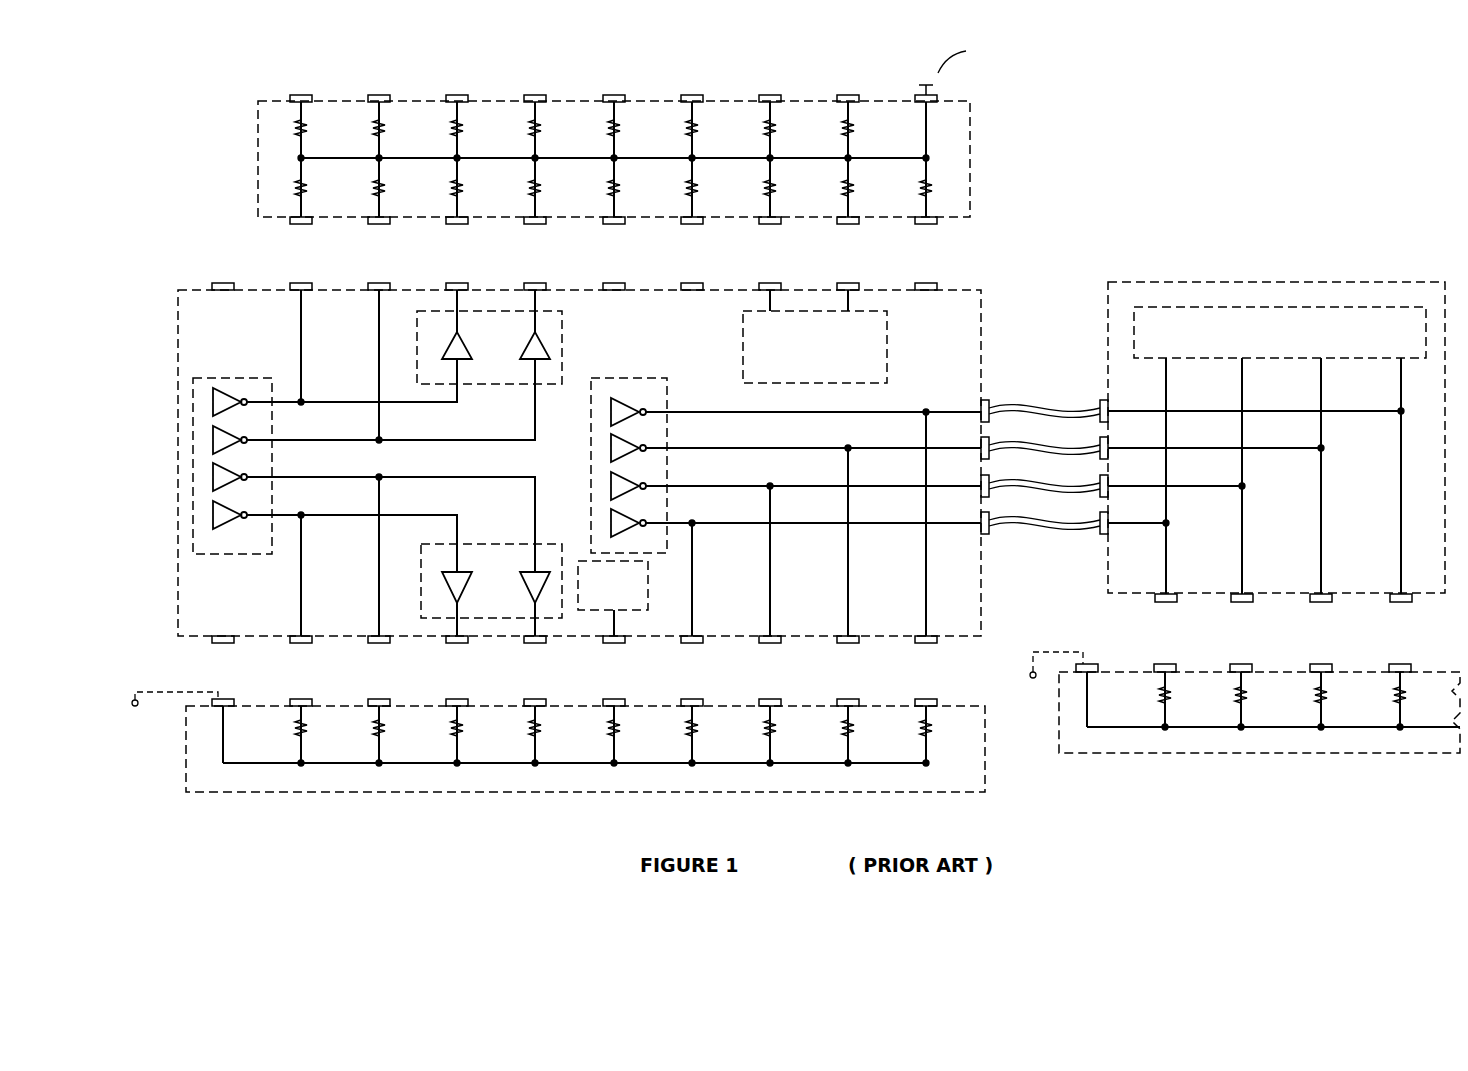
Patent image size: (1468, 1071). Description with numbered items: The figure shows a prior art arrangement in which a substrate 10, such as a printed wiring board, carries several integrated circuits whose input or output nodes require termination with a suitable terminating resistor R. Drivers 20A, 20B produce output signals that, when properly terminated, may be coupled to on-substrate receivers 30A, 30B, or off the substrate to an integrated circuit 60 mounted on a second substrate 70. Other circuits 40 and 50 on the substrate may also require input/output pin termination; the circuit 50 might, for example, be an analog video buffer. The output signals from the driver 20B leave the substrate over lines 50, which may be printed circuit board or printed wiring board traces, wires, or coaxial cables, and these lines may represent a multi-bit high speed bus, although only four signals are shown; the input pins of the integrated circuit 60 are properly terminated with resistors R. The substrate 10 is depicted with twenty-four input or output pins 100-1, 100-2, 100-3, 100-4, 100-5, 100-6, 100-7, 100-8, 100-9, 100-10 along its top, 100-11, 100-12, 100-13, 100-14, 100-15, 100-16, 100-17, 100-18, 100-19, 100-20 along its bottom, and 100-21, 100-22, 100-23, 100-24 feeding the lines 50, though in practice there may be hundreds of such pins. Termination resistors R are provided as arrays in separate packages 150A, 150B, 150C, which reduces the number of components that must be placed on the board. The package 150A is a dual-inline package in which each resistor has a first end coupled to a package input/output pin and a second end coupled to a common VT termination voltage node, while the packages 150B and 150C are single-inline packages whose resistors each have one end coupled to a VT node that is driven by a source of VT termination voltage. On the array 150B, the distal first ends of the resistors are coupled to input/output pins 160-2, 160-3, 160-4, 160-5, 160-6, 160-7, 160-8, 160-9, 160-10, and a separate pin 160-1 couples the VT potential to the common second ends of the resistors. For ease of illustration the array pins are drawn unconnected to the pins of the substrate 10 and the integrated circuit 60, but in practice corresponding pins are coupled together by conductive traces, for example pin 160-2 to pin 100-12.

The substrate 10 is at (178, 427).
The driver circuit 20A is at (228, 378).
The driver circuit 20B is at (591, 490).
The receiver circuit 30A is at (562, 333).
The receiver circuit 30B is at (470, 544).
The integrated circuit 40 is at (829, 358).
The lines 50 is at (1021, 391).
The integrated circuit 60 is at (1292, 338).
The second substrate 70 is at (1316, 282).
The input or output pin 100-1 is at (217, 283).
The input or output pin 100-2 is at (295, 283).
The input or output pin 100-3 is at (373, 283).
The input or output pin 100-4 is at (451, 283).
The input or output pin 100-5 is at (529, 283).
The input or output pin 100-6 is at (608, 283).
The input or output pin 100-7 is at (686, 283).
The input or output pin 100-8 is at (764, 283).
The input or output pin 100-9 is at (842, 283).
The input or output pin 100-10 is at (922, 283).
The input or output pin 100-11 is at (217, 643).
The input or output pin 100-12 is at (295, 643).
The input or output pin 100-13 is at (373, 643).
The input or output pin 100-14 is at (451, 643).
The input or output pin 100-15 is at (529, 643).
The input or output pin 100-16 is at (608, 643).
The input or output pin 100-17 is at (686, 643).
The input or output pin 100-18 is at (764, 643).
The input or output pin 100-19 is at (842, 643).
The input or output pin 100-20 is at (920, 643).
The input or output pin 100-21 is at (981, 408).
The input or output pin 100-22 is at (981, 445).
The input or output pin 100-23 is at (981, 483).
The input or output pin 100-24 is at (989, 533).
The termination resistor array package 150A is at (672, 75).
The termination resistor array package 150B is at (301, 805).
The termination resistor array package 150C is at (1200, 770).
The VT pin 160-1 is at (223, 699).
The input/output pin 160-2 is at (301, 699).
The input/output pin 160-3 is at (379, 699).
The input/output pin 160-4 is at (457, 699).
The input/output pin 160-5 is at (535, 699).
The input/output pin 160-6 is at (614, 699).
The input/output pin 160-7 is at (692, 699).
The input/output pin 160-8 is at (770, 699).
The input/output pin 160-9 is at (848, 699).
The input/output pin 160-10 is at (926, 699).